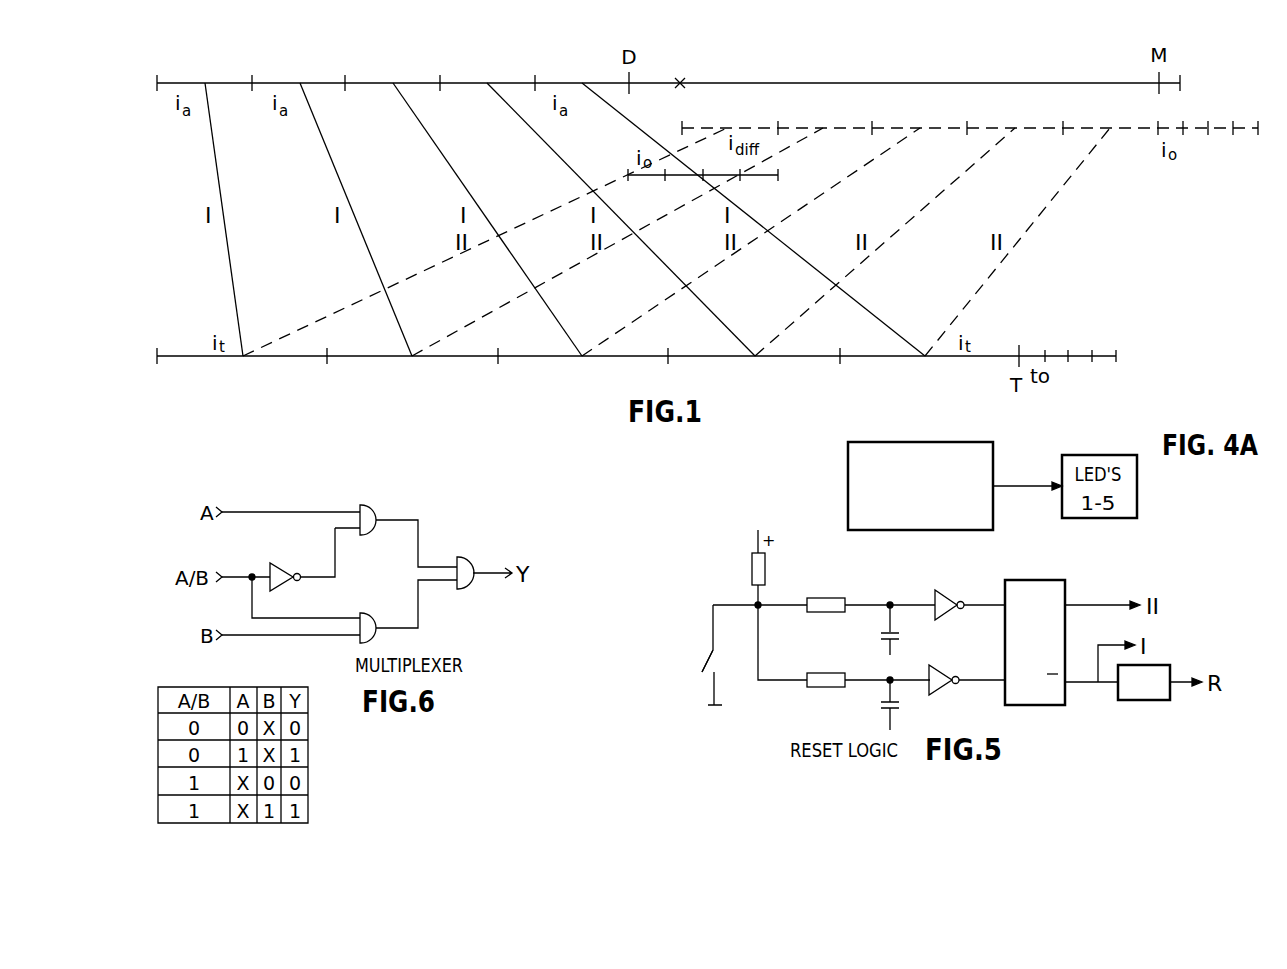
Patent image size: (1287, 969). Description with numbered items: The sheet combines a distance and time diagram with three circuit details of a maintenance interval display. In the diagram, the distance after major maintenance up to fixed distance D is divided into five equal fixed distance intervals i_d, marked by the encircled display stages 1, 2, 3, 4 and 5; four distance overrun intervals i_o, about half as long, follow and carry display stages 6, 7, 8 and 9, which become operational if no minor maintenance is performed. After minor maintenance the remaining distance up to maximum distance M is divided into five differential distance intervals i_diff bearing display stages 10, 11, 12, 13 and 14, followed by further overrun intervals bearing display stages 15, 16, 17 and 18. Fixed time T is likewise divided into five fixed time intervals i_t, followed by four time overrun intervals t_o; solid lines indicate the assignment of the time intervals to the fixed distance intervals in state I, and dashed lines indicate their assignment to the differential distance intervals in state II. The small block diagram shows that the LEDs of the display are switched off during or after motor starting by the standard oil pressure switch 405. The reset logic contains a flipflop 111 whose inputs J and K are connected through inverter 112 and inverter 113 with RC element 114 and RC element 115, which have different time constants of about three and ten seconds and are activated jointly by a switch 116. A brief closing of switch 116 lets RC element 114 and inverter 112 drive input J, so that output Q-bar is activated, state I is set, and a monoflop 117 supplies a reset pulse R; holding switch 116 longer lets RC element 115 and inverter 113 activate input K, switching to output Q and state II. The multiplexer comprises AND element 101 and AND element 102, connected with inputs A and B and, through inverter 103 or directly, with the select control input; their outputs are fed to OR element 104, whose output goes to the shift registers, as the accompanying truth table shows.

In FIG. 1, the display stage 1 is at (224, 221).
In FIG. 1, the display stage 2 is at (356, 221).
In FIG. 1, the display stage 3 is at (487, 221).
In FIG. 1, the display stage 4 is at (621, 221).
In FIG. 1, the display stage 5 is at (753, 221).
In FIG. 1, the display stage 6 is at (648, 193).
In FIG. 1, the display stage 7 is at (685, 193).
In FIG. 1, the display stage 8 is at (722, 193).
In FIG. 1, the display stage 9 is at (758, 193).
In FIG. 1, the display stage 10 is at (491, 226).
In FIG. 1, the display stage 11 is at (624, 226).
In FIG. 1, the display stage 12 is at (757, 226).
In FIG. 1, the display stage 13 is at (891, 226).
In FIG. 1, the display stage 14 is at (1024, 226).
In FIG. 1, the display stage 15 is at (1170, 108).
In FIG. 1, the display stage 16 is at (1195, 108).
In FIG. 1, the display stage 17 is at (1220, 108).
In FIG. 1, the display stage 18 is at (1245, 108).
In FIG. 6, the AND element 101 is at (384, 499).
In FIG. 6, the AND element 102 is at (384, 606).
In FIG. 6, the inverter 103 is at (281, 563).
In FIG. 6, the OR element 104 is at (485, 558).
In FIG. 5, the flipflop 111 is at (1042, 580).
In FIG. 5, the inverter 112 is at (965, 586).
In FIG. 5, the inverter 113 is at (948, 667).
In FIG. 5, the RC element 114 is at (853, 653).
In FIG. 5, the RC element 115 is at (862, 723).
In FIG. 5, the switch 116 is at (704, 660).
In FIG. 5, the monoflop 117 is at (1148, 700).
In FIG. 4A, the oil pressure switch 405 is at (994, 455).